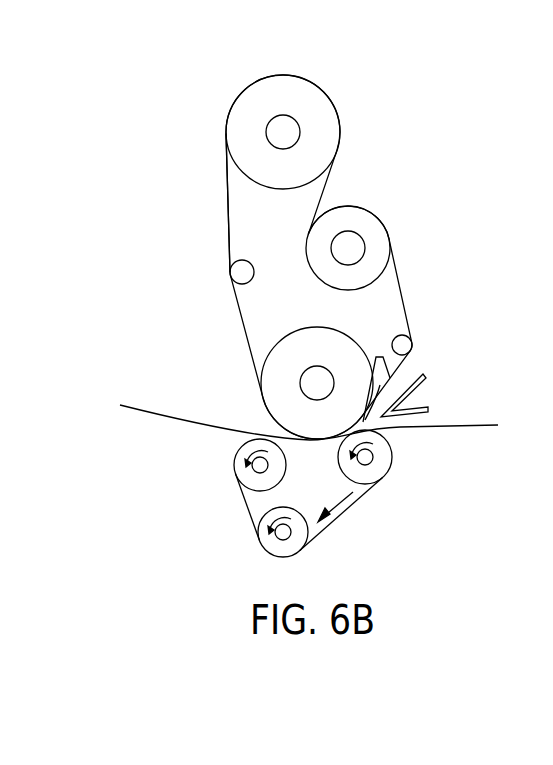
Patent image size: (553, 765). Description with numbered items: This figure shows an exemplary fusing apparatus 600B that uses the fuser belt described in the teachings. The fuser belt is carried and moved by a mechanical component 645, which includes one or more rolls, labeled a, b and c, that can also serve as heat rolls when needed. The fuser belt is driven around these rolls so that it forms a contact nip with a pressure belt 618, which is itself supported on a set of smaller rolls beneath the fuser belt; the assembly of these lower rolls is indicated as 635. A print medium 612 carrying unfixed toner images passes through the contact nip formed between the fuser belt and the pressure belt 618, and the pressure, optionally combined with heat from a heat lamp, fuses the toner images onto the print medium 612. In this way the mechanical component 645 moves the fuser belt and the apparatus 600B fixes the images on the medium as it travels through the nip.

The fusing apparatus 600B is at (364, 81).
The mechanical component 645 is at (347, 172).
The print medium 612 is at (468, 425).
The transport roller assembly 635 is at (232, 469).
The pressure belt 618 is at (367, 487).